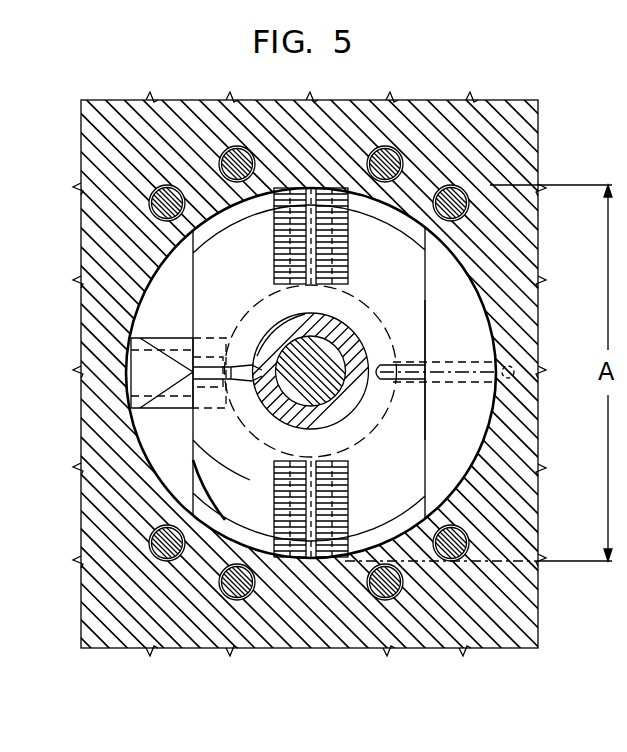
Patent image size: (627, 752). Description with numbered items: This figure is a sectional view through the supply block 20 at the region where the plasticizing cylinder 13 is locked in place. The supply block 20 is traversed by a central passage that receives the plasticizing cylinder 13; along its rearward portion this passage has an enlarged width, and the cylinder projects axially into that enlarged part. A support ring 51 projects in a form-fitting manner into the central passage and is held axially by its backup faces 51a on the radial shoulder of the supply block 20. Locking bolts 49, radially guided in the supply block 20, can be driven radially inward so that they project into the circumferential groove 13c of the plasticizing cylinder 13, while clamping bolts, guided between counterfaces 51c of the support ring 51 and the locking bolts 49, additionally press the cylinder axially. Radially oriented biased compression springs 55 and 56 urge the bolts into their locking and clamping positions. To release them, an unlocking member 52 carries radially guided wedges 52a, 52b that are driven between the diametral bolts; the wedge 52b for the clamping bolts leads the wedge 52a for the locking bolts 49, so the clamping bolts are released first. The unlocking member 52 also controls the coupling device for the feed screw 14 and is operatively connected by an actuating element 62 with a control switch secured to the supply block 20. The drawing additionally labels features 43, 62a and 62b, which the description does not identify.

The supply block 20 is at (80, 126).
The bolt hole 43 is at (452, 194).
The support ring 51 is at (149, 253).
The backup faces 51a is at (477, 336).
The counterfaces 51c is at (220, 521).
The locking bolts 49 is at (227, 458).
The unlocking member 52 is at (165, 338).
The wedge 52a is at (162, 372).
The wedge 52b is at (190, 362).
The plasticizing cylinder 13 is at (331, 331).
The circumferential groove 13c is at (247, 400).
The feed screw 14 is at (343, 403).
The compression spring 55 is at (277, 222).
The compression spring 56 is at (313, 311).
The actuating element 62 is at (463, 368).
The port 62a is at (513, 366).
The channel 62b is at (405, 385).